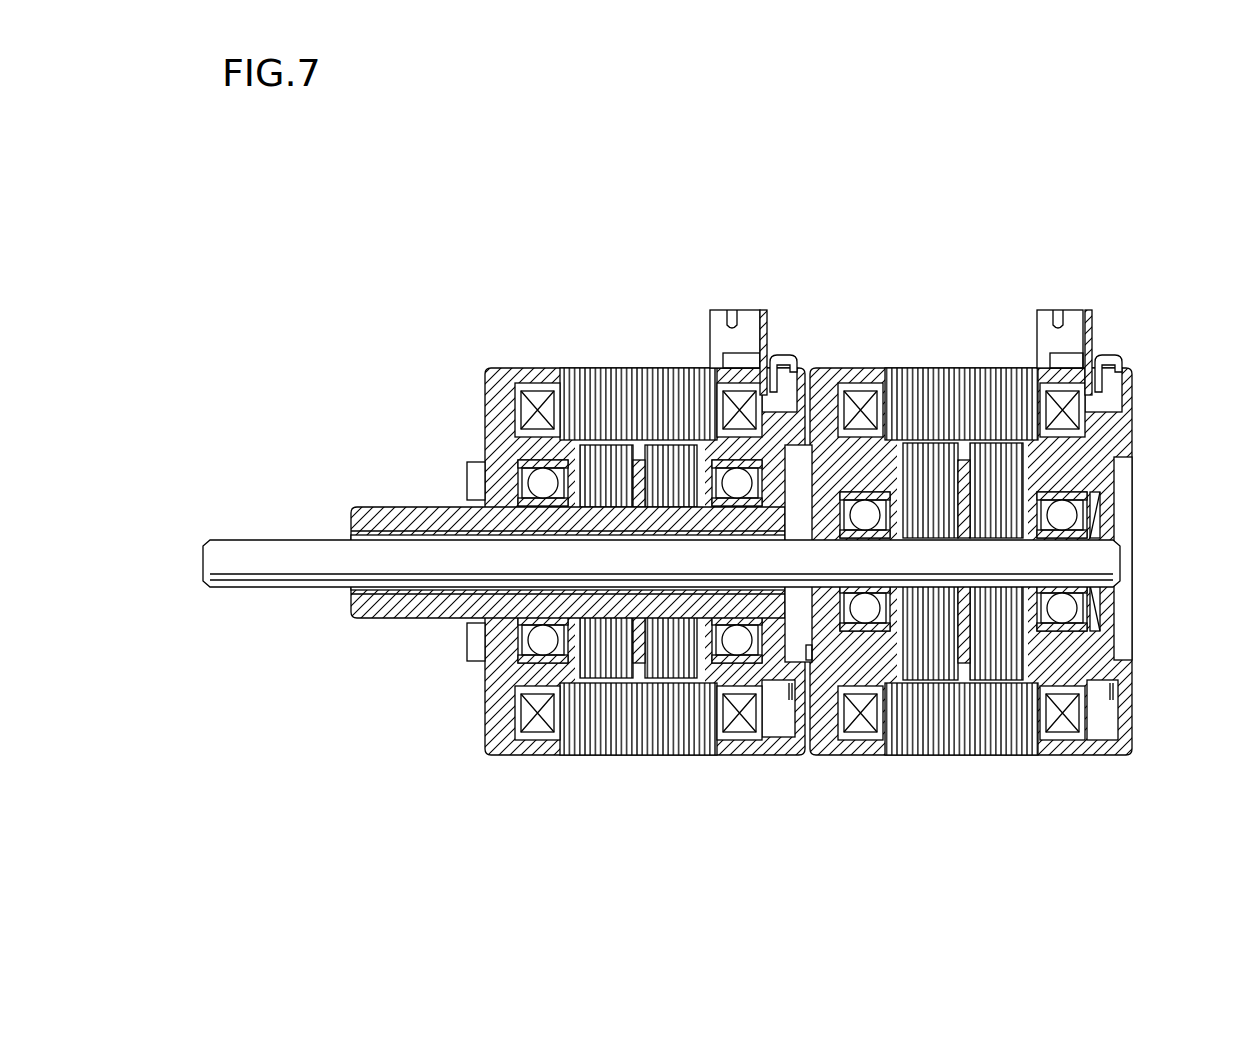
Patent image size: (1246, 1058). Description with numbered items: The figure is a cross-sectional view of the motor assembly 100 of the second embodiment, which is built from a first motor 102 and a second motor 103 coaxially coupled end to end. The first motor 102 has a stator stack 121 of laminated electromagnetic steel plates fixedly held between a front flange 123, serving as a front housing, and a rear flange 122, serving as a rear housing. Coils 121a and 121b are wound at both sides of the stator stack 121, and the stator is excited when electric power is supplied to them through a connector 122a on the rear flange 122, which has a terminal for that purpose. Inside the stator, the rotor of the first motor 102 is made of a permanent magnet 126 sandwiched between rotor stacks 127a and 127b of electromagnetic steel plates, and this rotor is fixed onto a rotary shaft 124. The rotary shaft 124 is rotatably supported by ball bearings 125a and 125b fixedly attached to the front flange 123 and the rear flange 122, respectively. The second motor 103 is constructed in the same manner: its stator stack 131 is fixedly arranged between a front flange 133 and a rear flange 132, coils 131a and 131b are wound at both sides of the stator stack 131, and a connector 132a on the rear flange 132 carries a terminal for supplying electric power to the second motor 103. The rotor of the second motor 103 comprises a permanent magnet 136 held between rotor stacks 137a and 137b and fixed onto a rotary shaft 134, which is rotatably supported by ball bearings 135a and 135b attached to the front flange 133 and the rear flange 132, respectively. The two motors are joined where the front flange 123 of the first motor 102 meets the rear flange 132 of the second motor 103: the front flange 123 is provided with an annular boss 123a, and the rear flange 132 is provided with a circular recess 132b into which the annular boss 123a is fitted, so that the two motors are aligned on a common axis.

The motor assembly 100 is at (997, 249).
The first motor 102 is at (950, 352).
The second motor 103 is at (622, 352).
The stator stack 121 is at (970, 737).
The coil 121a is at (865, 400).
The coil 121b is at (1062, 725).
The rear flange 122 is at (1107, 748).
The connector 122a is at (1090, 335).
The front flange 123 is at (845, 748).
The annular boss 123a is at (808, 650).
The rotary shaft 124 is at (275, 552).
The ball bearing 125a is at (862, 510).
The ball bearing 125b is at (1108, 500).
The permanent magnet 126 is at (965, 480).
The rotor stack 127a is at (938, 463).
The rotor stack 127b is at (993, 463).
The stator stack 131 is at (618, 740).
The coil 131a is at (540, 405).
The coil 131b is at (733, 738).
The rear flange 132 is at (775, 752).
The connector 132a is at (763, 358).
The circular recess 132b is at (787, 655).
The front flange 133 is at (495, 757).
The rotary shaft 134 is at (412, 512).
The ball bearing 135a is at (536, 478).
The ball bearing 135b is at (740, 478).
The permanent magnet 136 is at (640, 462).
The rotor stack 137a is at (607, 460).
The rotor stack 137b is at (668, 463).